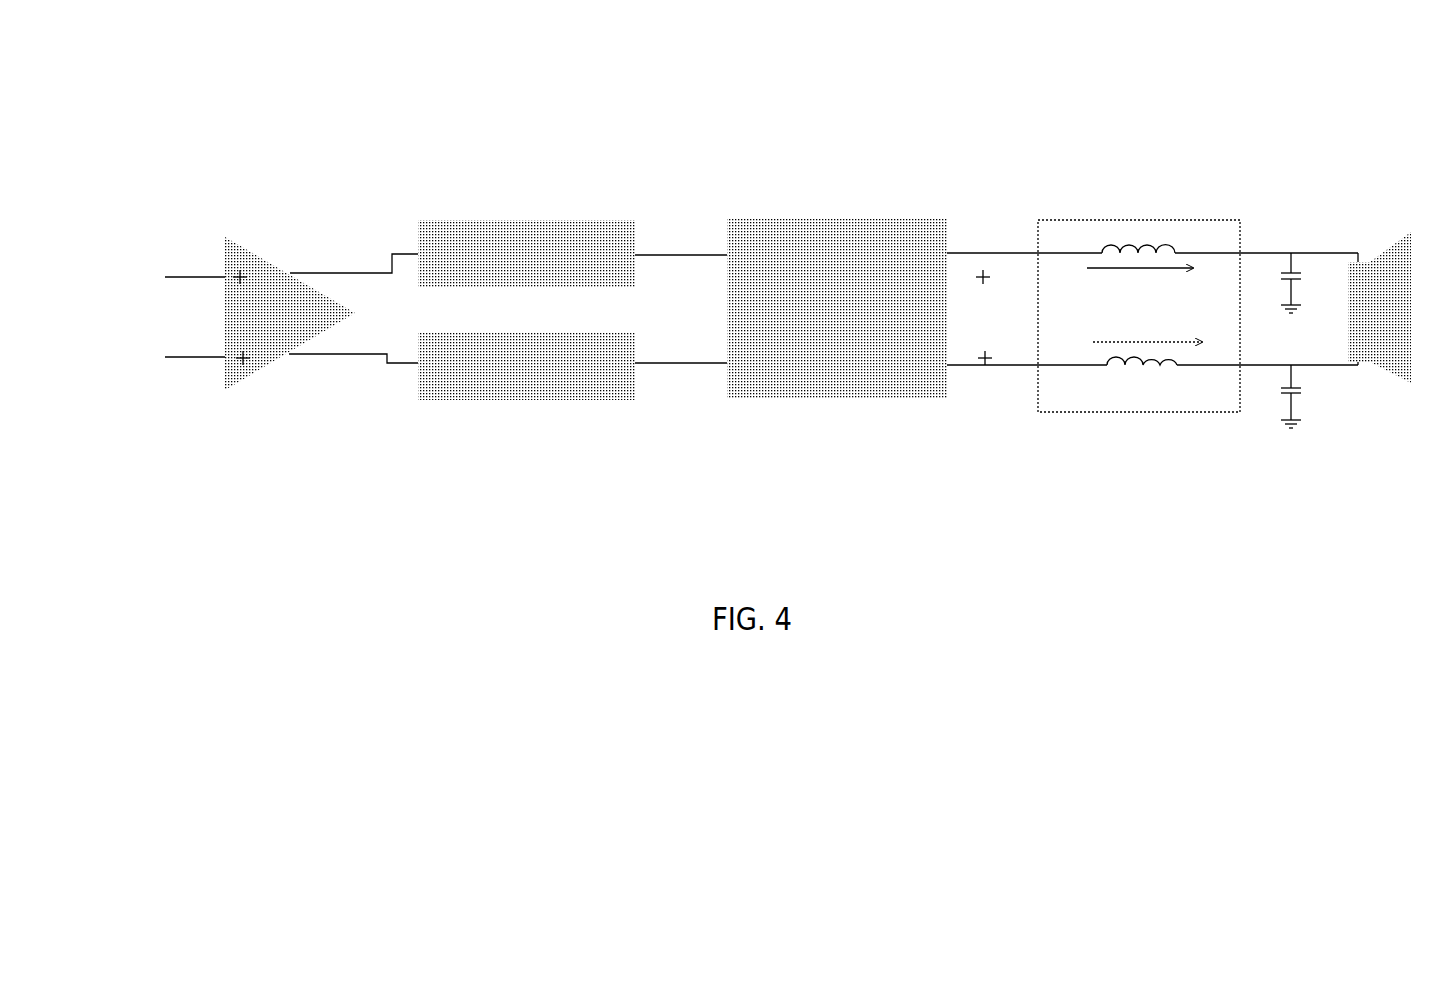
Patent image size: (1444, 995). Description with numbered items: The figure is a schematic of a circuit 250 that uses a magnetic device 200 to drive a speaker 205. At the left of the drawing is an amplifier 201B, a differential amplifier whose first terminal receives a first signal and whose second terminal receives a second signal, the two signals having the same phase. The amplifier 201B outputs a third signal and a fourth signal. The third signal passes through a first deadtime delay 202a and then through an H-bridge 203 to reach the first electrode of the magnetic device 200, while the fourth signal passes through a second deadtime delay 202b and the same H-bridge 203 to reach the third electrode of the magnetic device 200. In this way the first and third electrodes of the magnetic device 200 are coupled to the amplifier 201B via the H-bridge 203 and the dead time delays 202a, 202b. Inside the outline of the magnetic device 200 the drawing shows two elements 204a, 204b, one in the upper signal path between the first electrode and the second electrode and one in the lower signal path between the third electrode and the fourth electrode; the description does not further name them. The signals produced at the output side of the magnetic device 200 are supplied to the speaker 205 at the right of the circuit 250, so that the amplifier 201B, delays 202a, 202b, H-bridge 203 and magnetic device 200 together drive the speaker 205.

The circuit 250 is at (1436, 92).
The amplifier 201B is at (290, 313).
The first deadtime delay 202a is at (526, 241).
The second deadtime delay 202b is at (526, 383).
The H-bridge 203 is at (837, 308).
The magnetic device 200 is at (1139, 302).
The inductor 204a is at (1138, 237).
The inductor 204b is at (1142, 378).
The speaker 205 is at (1379, 307).